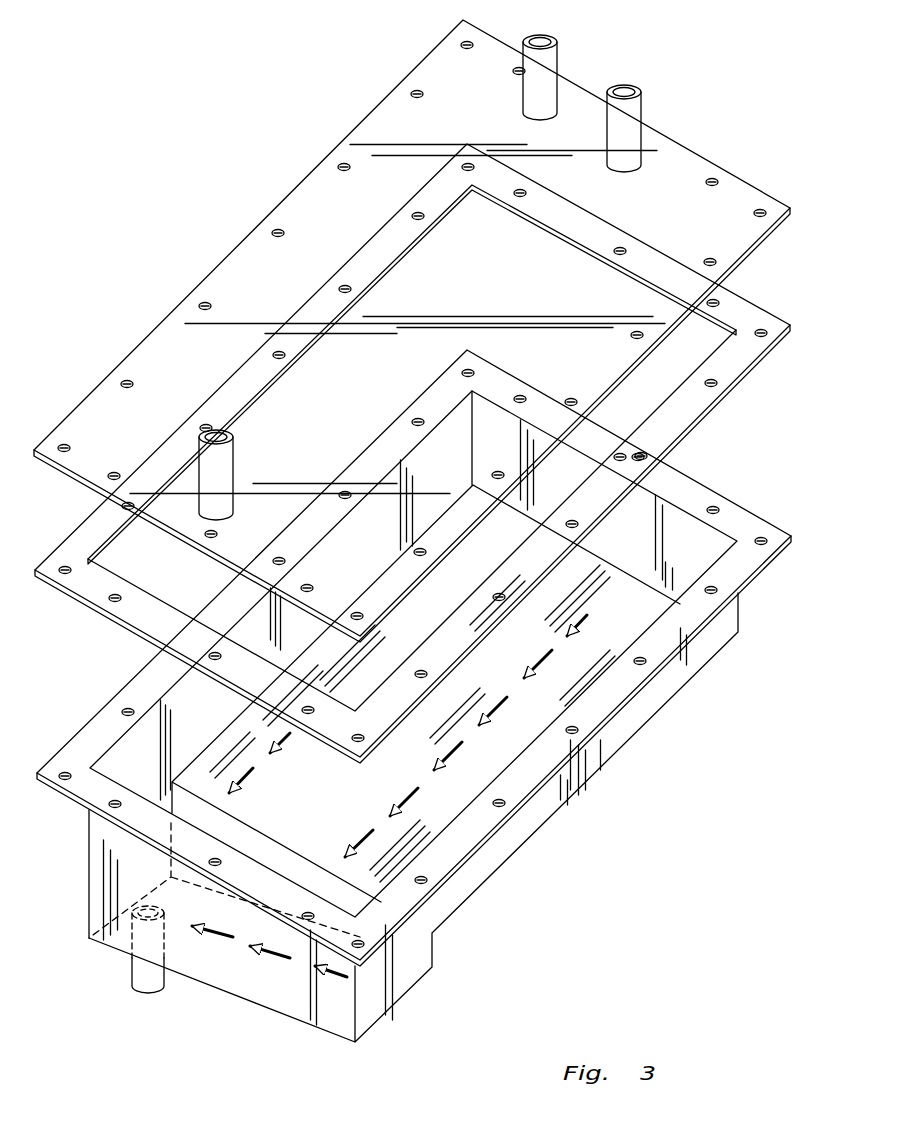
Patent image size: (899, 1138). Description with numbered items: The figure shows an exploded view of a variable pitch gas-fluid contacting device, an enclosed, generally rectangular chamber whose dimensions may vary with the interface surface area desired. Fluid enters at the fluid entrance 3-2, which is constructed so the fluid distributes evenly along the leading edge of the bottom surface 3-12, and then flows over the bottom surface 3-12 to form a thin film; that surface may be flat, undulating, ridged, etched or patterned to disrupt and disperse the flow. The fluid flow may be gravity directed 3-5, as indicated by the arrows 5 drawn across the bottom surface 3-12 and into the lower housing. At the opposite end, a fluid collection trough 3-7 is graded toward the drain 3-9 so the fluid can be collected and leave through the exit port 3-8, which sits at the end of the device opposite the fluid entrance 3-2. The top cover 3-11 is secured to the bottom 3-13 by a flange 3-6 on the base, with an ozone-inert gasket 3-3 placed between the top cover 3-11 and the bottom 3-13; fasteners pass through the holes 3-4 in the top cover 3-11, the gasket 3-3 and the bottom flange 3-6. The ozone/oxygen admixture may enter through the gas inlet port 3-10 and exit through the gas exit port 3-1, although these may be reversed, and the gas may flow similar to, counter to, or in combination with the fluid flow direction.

The gas exit port 3-1 is at (540, 72).
The fluid entrance 3-2 is at (640, 125).
The ozone-inert gasket 3-3 is at (740, 360).
The holes 3-4 is at (275, 232).
The gravity directed fluid flow 3-5 is at (588, 628).
The flange 3-6 is at (467, 833).
The fluid collection trough 3-7 is at (385, 827).
The exit port 3-8 is at (145, 988).
The drain 3-9 is at (168, 877).
The gas inlet port 3-10 is at (218, 437).
The top cover 3-11 is at (398, 127).
The bottom surface 3-12 is at (233, 733).
The bottom 3-13 is at (598, 758).
The flow path arrows 5 is at (400, 793).